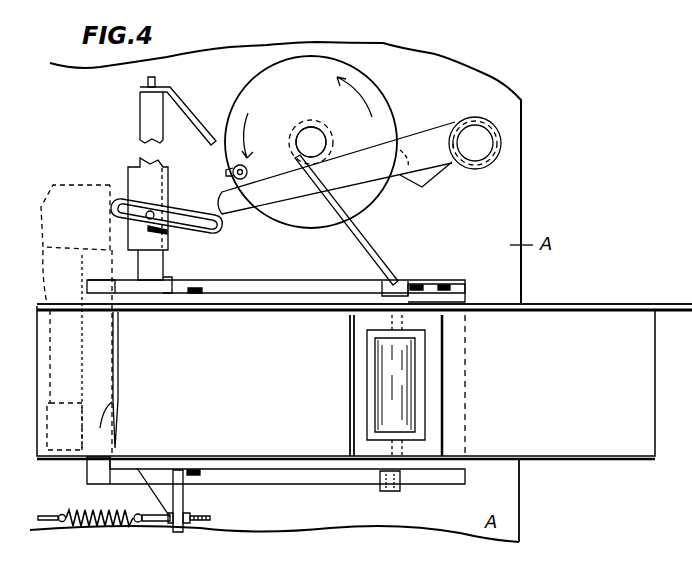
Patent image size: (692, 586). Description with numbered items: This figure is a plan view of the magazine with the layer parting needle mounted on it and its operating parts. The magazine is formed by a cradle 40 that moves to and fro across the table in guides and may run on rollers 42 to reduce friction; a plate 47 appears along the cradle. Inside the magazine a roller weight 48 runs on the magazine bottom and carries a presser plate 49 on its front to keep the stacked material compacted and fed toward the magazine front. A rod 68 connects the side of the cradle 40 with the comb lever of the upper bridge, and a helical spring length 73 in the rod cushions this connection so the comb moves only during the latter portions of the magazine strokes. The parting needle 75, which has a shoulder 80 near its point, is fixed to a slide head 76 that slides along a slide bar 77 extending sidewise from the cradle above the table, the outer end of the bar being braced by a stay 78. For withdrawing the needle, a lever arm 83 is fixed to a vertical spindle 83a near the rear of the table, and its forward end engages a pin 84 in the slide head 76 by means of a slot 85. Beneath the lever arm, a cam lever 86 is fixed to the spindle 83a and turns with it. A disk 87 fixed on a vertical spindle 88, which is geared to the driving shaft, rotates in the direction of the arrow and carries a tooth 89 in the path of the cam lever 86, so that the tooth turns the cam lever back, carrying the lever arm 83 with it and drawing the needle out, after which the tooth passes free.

The cradle 40 is at (288, 292).
The rollers 42 is at (386, 493).
The frame plate 47 is at (520, 314).
The roller weight 48 is at (430, 387).
The presser plate 49 is at (350, 405).
The rod 68 is at (152, 524).
The helical spring length 73 is at (102, 528).
The parting needle 75 is at (120, 348).
The slide head 76 is at (148, 204).
The slide bar 77 is at (155, 185).
The stay 78 is at (190, 102).
The shoulder 80 is at (97, 423).
The lever arm 83 is at (336, 168).
The spindle 83a is at (490, 140).
The pin 84 is at (160, 230).
The slot 85 is at (214, 232).
The cam lever 86 is at (449, 172).
The disk 87 is at (306, 95).
The vertical spindle 88 is at (329, 138).
The tooth 89 is at (232, 172).